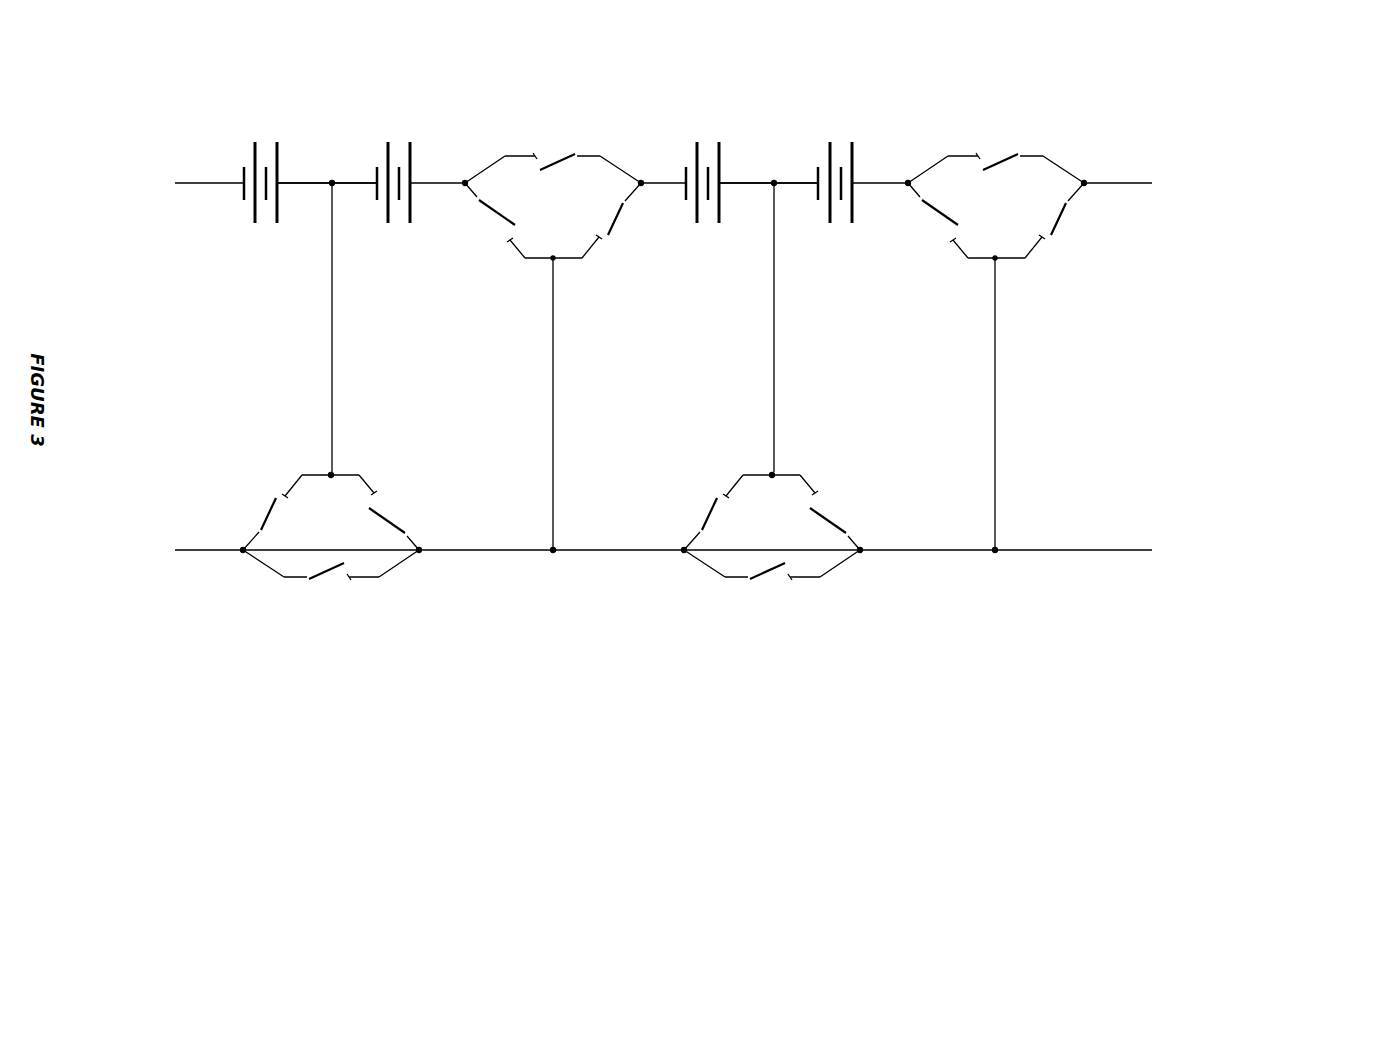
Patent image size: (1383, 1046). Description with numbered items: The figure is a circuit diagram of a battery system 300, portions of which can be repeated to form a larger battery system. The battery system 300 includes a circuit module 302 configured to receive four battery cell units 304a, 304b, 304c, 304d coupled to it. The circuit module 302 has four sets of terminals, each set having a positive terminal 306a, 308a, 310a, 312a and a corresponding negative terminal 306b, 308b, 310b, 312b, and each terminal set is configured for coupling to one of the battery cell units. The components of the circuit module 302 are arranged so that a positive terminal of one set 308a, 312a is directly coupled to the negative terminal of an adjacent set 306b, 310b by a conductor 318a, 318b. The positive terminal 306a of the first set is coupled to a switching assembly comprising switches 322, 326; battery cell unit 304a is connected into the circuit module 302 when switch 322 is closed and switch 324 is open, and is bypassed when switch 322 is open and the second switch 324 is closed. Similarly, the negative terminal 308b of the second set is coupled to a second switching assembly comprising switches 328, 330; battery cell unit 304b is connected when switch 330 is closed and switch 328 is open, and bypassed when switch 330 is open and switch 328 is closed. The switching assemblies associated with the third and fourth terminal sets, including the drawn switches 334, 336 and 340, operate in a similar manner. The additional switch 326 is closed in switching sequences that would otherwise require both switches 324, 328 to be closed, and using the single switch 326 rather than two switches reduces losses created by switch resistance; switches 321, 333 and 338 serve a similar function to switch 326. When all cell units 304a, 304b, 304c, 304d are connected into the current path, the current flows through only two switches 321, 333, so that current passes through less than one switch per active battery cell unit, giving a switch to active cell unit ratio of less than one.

The battery system 300 is at (1329, 738).
The circuit module 302 is at (1279, 655).
The battery cell unit 304a is at (831, 222).
The battery cell unit 304b is at (697, 143).
The battery cell unit 304c is at (398, 192).
The battery cell unit 304d is at (256, 143).
The positive terminal 306a is at (853, 183).
The negative terminal 306b is at (818, 177).
The positive terminal 308a is at (720, 180).
The negative terminal 308b is at (686, 190).
The positive terminal 310a is at (410, 183).
The negative terminal 310b is at (375, 177).
The positive terminal 312a is at (278, 182).
The negative terminal 312b is at (245, 188).
The conductor 318a is at (760, 178).
The conductor 318b is at (300, 178).
The switch 321 is at (995, 165).
The switch 322 is at (945, 217).
The second switch 324 is at (837, 508).
The additional switch 326 is at (767, 573).
The second switch 328 is at (725, 512).
The switch 330 is at (612, 237).
The switch 333 is at (550, 166).
The switch 334 is at (500, 215).
The switch 336 is at (392, 503).
The switch 338 is at (327, 573).
The switch 340 is at (287, 507).